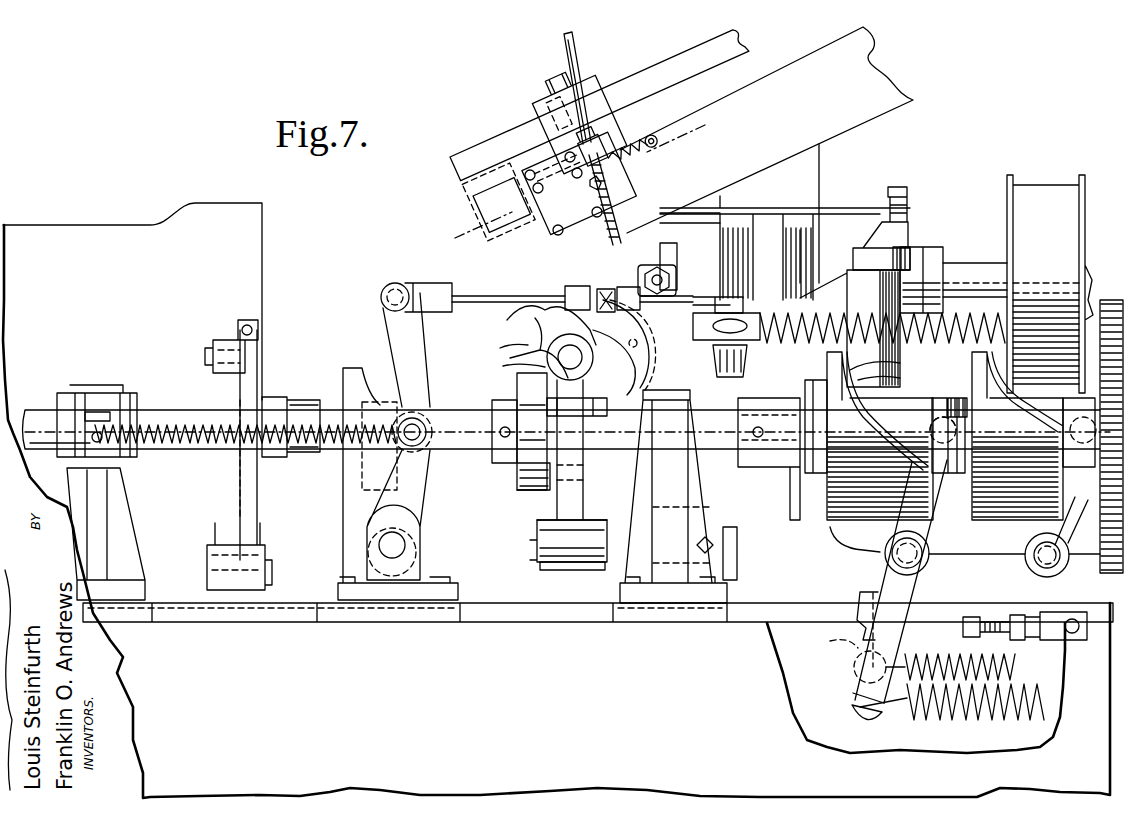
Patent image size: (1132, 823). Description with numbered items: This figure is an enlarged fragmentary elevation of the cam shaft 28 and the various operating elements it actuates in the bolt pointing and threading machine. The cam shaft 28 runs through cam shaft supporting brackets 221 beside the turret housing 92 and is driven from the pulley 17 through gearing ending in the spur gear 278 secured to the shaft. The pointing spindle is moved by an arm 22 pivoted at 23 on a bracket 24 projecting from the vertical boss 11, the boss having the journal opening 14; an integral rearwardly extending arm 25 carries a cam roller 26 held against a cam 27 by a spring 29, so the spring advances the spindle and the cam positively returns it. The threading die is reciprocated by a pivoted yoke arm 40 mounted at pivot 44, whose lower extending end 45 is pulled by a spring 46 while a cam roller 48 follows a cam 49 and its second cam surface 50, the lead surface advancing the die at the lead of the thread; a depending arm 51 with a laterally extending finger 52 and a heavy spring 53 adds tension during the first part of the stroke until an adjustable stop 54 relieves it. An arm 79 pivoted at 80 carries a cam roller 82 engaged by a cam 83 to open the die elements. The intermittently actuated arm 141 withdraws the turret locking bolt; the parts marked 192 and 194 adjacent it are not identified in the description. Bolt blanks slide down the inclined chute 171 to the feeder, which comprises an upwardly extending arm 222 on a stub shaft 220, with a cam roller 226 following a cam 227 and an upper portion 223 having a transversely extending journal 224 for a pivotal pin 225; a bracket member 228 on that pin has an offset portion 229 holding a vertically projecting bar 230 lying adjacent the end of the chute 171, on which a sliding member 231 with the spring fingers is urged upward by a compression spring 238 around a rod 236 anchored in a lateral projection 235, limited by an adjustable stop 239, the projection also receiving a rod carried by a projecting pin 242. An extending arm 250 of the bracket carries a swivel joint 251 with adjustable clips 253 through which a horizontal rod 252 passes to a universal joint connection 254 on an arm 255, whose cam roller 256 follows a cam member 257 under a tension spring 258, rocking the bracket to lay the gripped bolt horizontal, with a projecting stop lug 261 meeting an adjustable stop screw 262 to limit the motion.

The housing 92 is at (262, 212).
The cam shaft 28 is at (448, 412).
The tension spring 258 is at (183, 424).
The cam shaft supporting bracket 221 is at (125, 520).
The intermittently actuated arm 141 is at (257, 497).
The cylinder stop 192 is at (226, 340).
The collar 194 is at (280, 400).
The cam member 257 is at (356, 500).
The arm 255 is at (418, 375).
The universal joint connection 254 is at (440, 283).
The cam roller 256 is at (428, 462).
The horizontal rod 252 is at (480, 296).
The adjustable clips 253 is at (565, 290).
The swivel joint 251 is at (604, 287).
The lateral projection 235 is at (678, 268).
The projecting pin 242 is at (695, 297).
The cam roller 26 is at (713, 360).
The offset portion 229 is at (655, 340).
The extending arm 250 is at (632, 368).
The bracket member 228 is at (540, 313).
The transversely extending journal 224 is at (515, 340).
The projecting stop lug 261 is at (506, 348).
The upper portion 223 is at (508, 366).
The pivotal pin 225 is at (584, 368).
The cam 227 is at (517, 388).
The cam roller 226 is at (522, 492).
The upwardly extending arm 222 is at (583, 507).
The adjustable stop screw 262 is at (571, 417).
The stub shaft 220 is at (612, 568).
The cam 27 is at (782, 460).
The cam 49 is at (862, 520).
The cam roller 48 is at (930, 427).
The bracket 24 is at (900, 363).
The second cam surface 50 is at (900, 378).
The cam 83 is at (1005, 520).
The cam roller 82 is at (1063, 407).
The spur gear 278 is at (1111, 573).
The pivot 44 is at (913, 550).
The pivot 80 is at (1062, 565).
The pivoted yoke arm 40 is at (935, 494).
The arm 79 is at (1078, 520).
The laterally extending finger 52 is at (858, 620).
The lower extending end 45 is at (829, 647).
The depending arm 51 is at (866, 718).
The spring 46 is at (942, 662).
The spring 53 is at (930, 716).
The adjustable stop 54 is at (975, 615).
The vertical boss 11 is at (818, 228).
The rearwardly extending arm 25 is at (836, 300).
The arm 22 is at (878, 240).
The pivot 23 is at (903, 250).
The spring 29 is at (978, 293).
The driven pulley 17 is at (1035, 190).
The inclined chute 171 is at (793, 65).
The journal opening 14 is at (581, 178).
The vertically projecting bar 230 is at (535, 144).
The sliding member 231 is at (579, 183).
The adjustable stop 239 is at (585, 150).
The rod 236 is at (578, 48).
The compression spring 238 is at (612, 214).